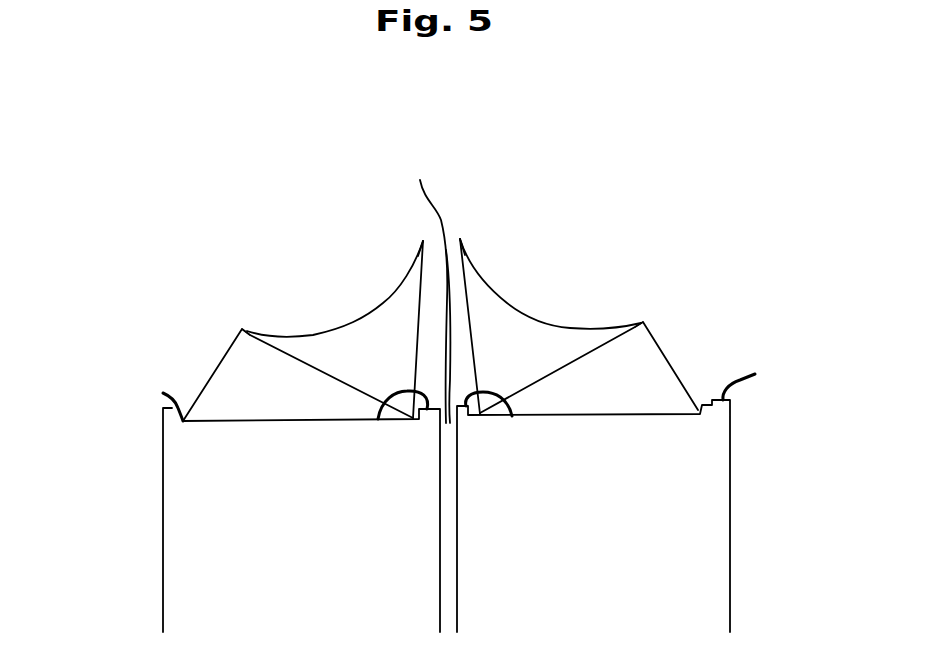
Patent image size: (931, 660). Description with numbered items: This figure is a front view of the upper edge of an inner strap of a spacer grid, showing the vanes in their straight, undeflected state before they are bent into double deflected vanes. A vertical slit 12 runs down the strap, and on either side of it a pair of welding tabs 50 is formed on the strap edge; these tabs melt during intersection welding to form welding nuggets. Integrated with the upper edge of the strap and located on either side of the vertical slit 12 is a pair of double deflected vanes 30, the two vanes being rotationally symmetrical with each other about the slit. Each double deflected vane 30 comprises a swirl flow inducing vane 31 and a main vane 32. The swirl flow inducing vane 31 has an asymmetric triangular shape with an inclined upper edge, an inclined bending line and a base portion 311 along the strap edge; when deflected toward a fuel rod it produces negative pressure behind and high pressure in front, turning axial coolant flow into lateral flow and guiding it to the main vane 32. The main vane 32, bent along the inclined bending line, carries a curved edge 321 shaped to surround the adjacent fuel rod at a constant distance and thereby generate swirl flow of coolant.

The vertical slit 12 is at (423, 281).
The double deflected vane 30 is at (265, 174).
The swirl flow inducing vane 31 is at (230, 375).
The base portion 311 is at (242, 422).
The main vane 32 is at (382, 320).
The curved edge 321 is at (410, 265).
The welding tab 50 is at (163, 393).